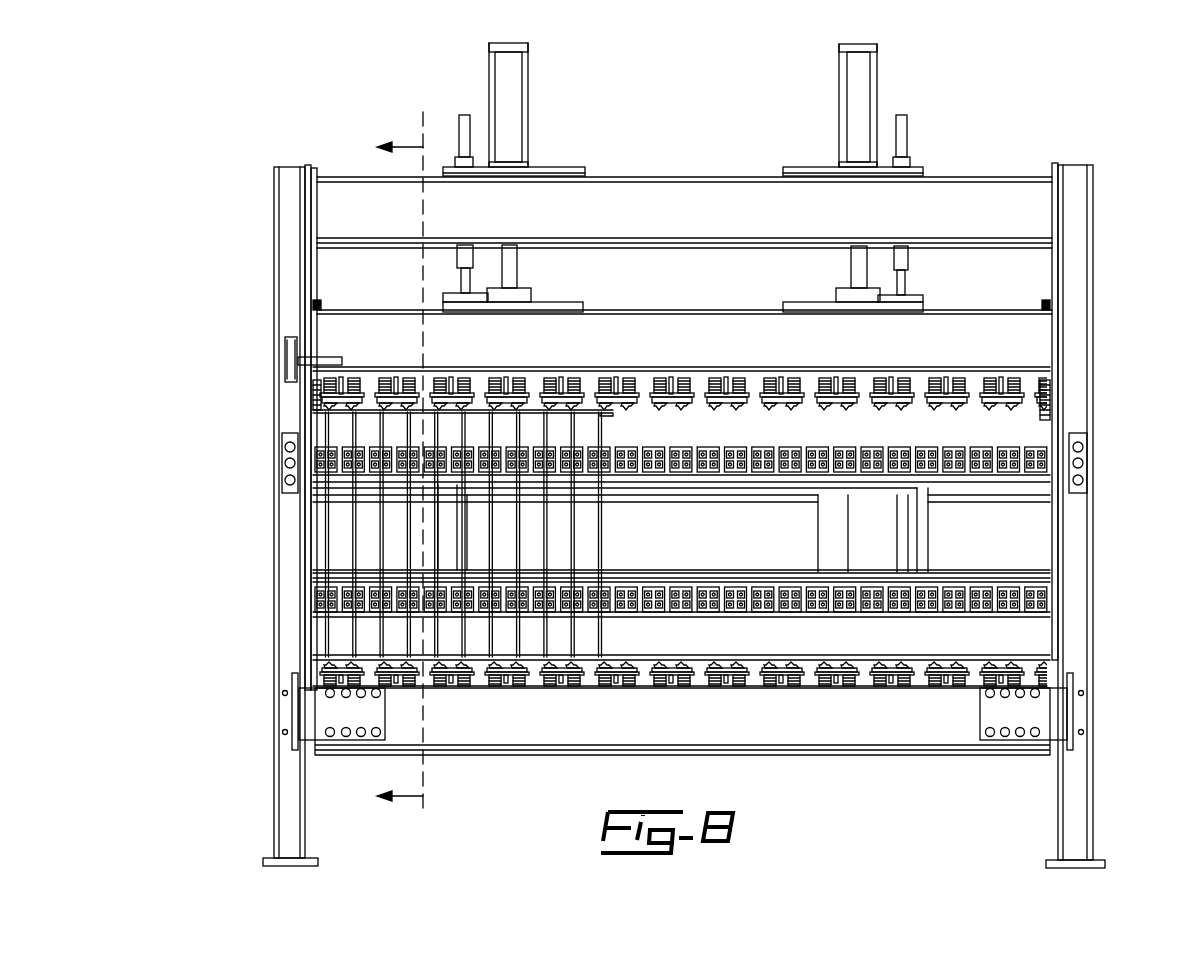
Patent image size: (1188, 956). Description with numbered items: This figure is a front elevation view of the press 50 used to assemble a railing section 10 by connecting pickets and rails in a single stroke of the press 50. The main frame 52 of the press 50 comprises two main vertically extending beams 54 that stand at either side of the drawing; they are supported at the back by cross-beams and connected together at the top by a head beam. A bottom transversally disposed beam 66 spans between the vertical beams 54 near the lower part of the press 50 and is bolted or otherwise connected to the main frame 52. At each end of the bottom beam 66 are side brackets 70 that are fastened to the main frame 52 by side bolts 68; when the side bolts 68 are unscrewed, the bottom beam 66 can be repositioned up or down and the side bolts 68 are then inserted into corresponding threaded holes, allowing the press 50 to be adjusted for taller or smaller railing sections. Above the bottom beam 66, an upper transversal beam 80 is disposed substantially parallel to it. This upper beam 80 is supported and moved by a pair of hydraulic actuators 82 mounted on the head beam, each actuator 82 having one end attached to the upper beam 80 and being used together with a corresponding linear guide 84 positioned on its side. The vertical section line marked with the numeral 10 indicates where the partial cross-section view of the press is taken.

The railing section 10 is at (426, 132).
The press 50 is at (645, 454).
The main frame 52 is at (671, 515).
The main vertically extending beams 54 is at (289, 323).
The bottom transversally disposed beam 66 is at (820, 715).
The side bolts 68 is at (292, 738).
The side brackets 70 is at (320, 718).
The upper transversal beam 80 is at (676, 345).
The hydraulic actuators 82 is at (513, 47).
The linear guide 84 is at (462, 137).